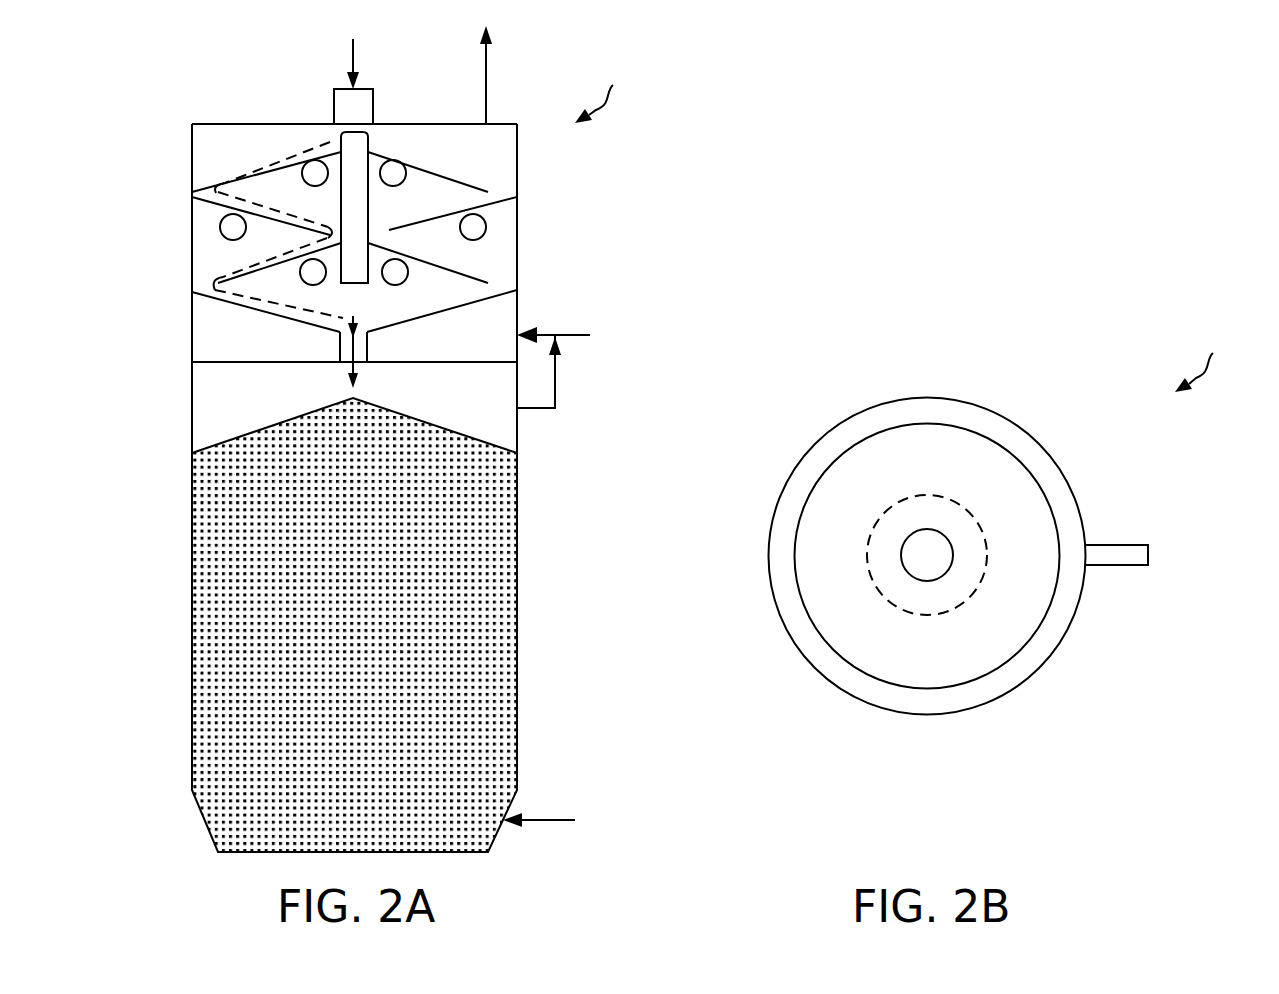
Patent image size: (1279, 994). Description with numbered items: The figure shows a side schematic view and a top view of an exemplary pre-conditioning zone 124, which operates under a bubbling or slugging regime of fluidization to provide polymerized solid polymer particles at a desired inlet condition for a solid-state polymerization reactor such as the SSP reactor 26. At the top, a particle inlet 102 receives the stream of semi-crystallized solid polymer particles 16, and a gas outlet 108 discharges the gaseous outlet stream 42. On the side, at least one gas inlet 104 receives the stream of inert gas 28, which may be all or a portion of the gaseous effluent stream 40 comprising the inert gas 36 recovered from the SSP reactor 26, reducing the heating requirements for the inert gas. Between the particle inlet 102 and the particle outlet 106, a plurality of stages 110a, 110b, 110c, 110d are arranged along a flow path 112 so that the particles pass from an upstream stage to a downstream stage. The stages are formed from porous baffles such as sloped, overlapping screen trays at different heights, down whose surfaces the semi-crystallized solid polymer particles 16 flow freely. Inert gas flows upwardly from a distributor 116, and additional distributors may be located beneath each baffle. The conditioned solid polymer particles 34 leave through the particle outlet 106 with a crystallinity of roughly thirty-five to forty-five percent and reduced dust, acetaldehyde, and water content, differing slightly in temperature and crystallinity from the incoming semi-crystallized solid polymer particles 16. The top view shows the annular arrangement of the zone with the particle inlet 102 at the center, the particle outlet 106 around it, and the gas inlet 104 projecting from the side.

In FIG. 2A, the stream of semi-crystallized solid polymer particles 16 is at (353, 43).
In FIG. 2A, the SSP reactor 26 is at (196, 584).
In FIG. 2A, the stream of inert gas 28 is at (572, 333).
In FIG. 2B, the stream of inert gas 28 is at (1140, 557).
In FIG. 2A, the stream of conditioned solid polymer particles 34 is at (352, 368).
In FIG. 2A, the inert gas 36 is at (545, 820).
In FIG. 2A, the gaseous effluent stream 40 is at (555, 377).
In FIG. 2A, the gaseous outlet stream 42 is at (487, 55).
In FIG. 2A, the particle inlet 102 is at (362, 88).
In FIG. 2B, the particle inlet 102 is at (928, 527).
In FIG. 2A, the gas inlet 104 is at (523, 330).
In FIG. 2B, the gas inlet 104 is at (1085, 543).
In FIG. 2A, the particle outlet 106 is at (348, 347).
In FIG. 2B, the particle outlet 106 is at (935, 613).
In FIG. 2A, the gas outlet 108 is at (487, 122).
In FIG. 2A, the stage 110a is at (222, 183).
In FIG. 2B, the stage 110a is at (985, 478).
In FIG. 2A, the stage 110b is at (213, 192).
In FIG. 2A, the stage 110c is at (218, 277).
In FIG. 2A, the stage 110d is at (215, 292).
In FIG. 2A, the flow path 112 is at (260, 163).
In FIG. 2A, the distributor 116 is at (498, 347).
In FIG. 2A, the pre-conditioning zone 124 is at (621, 99).
In FIG. 2B, the pre-conditioning zone 124 is at (1018, 529).